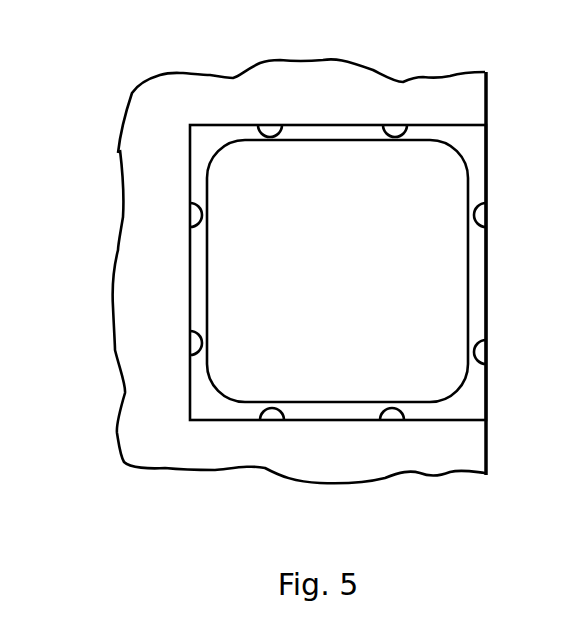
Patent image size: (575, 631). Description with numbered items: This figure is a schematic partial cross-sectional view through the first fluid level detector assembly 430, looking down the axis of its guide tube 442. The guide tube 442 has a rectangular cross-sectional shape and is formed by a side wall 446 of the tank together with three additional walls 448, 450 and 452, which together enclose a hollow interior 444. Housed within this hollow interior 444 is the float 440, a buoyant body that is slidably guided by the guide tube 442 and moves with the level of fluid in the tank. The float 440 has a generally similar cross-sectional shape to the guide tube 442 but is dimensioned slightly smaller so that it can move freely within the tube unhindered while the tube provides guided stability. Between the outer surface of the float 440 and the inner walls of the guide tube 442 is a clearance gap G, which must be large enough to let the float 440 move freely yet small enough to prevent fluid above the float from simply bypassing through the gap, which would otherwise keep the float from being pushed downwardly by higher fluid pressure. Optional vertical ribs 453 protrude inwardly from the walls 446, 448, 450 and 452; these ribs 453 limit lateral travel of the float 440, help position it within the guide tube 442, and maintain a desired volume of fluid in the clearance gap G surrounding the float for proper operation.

The first fluid level detector assembly 430 is at (231, 88).
The float 440 is at (275, 345).
The guide tube 442 is at (190, 308).
The hollow interior 444 is at (190, 288).
The side wall 446 is at (486, 258).
The wall 448 is at (330, 423).
The wall 450 is at (190, 378).
The wall 452 is at (451, 124).
The vertical ribs 453 is at (195, 205).
The clearance gap G is at (328, 162).